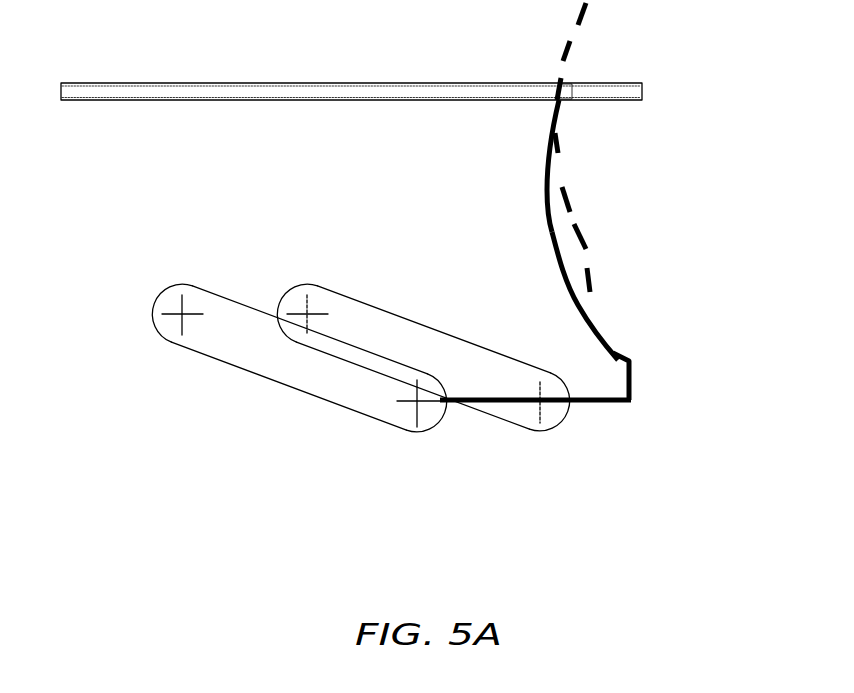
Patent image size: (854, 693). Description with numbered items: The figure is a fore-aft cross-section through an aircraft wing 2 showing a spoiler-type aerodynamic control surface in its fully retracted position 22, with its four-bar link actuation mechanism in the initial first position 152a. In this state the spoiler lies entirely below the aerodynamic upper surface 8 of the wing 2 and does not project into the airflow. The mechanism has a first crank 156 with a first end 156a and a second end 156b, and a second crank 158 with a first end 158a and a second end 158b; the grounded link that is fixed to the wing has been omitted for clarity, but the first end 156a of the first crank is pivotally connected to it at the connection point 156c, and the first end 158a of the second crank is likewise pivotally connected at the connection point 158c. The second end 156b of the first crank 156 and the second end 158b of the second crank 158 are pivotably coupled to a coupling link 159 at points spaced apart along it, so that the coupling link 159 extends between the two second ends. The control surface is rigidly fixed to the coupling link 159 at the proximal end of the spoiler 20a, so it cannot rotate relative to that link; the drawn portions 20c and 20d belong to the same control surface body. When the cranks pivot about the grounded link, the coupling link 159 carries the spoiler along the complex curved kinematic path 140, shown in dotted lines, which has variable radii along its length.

The aircraft wing 2 is at (295, 93).
The aerodynamic upper surface 8 is at (192, 85).
The curved kinematic path 140 is at (587, 12).
The fully retracted position 22 is at (598, 195).
The curved portion of tab 20d is at (539, 175).
The lower curved portion of tab 20c is at (578, 310).
The proximal end of the spoiler 20a is at (623, 382).
The coupling link 159 is at (590, 403).
The first crank 156 is at (253, 352).
The first end of the first crank 156a is at (175, 325).
The second end of the first crank 156b is at (398, 413).
The connection point 156c is at (163, 305).
The second crank 158 is at (363, 337).
The first end of the second crank 158a is at (290, 308).
The second end of the second crank 158b is at (520, 387).
The connection point 158c is at (311, 292).
The first position 152a is at (222, 526).